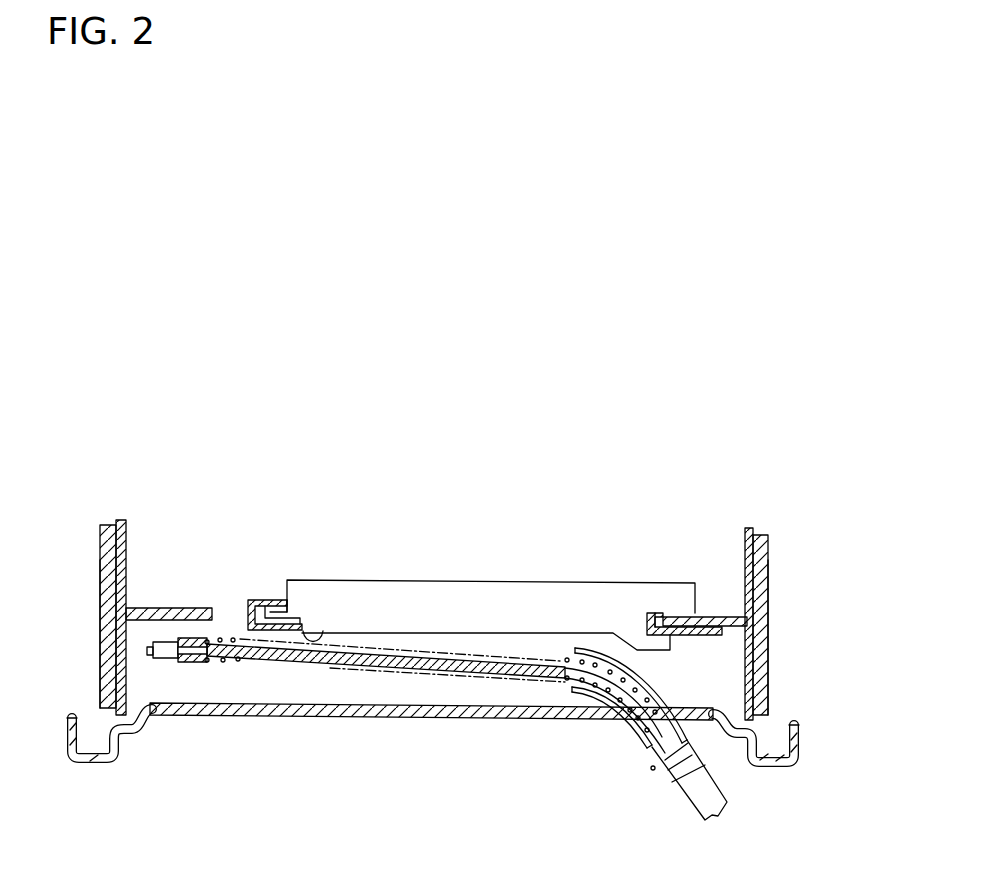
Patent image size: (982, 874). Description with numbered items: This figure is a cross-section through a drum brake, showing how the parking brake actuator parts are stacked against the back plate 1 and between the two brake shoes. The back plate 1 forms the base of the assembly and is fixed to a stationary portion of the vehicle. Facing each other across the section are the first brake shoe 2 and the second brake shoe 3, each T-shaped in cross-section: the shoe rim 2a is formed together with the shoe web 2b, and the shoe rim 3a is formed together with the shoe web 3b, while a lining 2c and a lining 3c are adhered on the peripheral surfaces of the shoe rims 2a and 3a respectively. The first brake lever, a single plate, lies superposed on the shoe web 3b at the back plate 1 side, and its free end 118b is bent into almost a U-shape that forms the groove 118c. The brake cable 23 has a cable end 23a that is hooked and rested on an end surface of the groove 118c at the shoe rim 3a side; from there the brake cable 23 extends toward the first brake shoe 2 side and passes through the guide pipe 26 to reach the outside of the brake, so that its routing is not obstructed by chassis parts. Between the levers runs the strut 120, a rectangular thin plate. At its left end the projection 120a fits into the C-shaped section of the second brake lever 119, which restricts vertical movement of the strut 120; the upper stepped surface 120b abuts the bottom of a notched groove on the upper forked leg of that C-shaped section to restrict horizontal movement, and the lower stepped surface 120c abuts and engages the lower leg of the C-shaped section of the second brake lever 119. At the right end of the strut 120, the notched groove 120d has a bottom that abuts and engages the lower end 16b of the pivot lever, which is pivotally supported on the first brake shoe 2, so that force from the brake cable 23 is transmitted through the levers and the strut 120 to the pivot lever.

The back plate 1 is at (407, 717).
The first brake shoe 2 is at (773, 545).
The shoe rim 2a is at (750, 528).
The shoe web 2b is at (703, 615).
The lining 2c is at (772, 617).
The second brake shoe 3 is at (100, 537).
The shoe rim 3a is at (125, 521).
The shoe web 3b is at (178, 608).
The lining 3c is at (100, 617).
The lower end of the pivot lever 16b is at (680, 630).
The brake cable 23 is at (512, 680).
The cable end 23a is at (172, 662).
The guide pipe 26 is at (640, 738).
The free end 118b is at (192, 662).
The groove 118c is at (195, 643).
The second brake lever 119 is at (248, 613).
The strut 120 is at (480, 580).
The projection 120a is at (270, 613).
The upper stepped surface 120b is at (282, 590).
The lower stepped surface 120c is at (300, 622).
The notched groove 120d is at (663, 612).